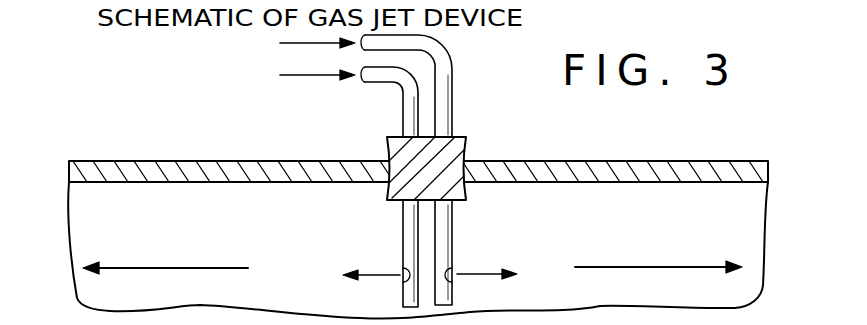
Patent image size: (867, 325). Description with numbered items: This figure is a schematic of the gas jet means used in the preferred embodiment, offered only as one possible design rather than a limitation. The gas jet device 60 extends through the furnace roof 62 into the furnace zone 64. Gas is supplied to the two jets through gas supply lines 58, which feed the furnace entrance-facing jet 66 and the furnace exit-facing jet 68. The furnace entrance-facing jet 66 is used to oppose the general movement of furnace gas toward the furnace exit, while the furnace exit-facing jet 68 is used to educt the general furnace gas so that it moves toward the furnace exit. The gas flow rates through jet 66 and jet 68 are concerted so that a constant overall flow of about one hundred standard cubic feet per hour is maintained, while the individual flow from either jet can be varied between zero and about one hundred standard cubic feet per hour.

The gas supply lines 58 is at (295, 75).
The gas jet device 60 is at (430, 171).
The furnace roof 62 is at (518, 160).
The furnace zone 64 is at (327, 232).
The furnace entrance-facing jet 66 is at (413, 237).
The furnace exit-facing jet 68 is at (443, 249).